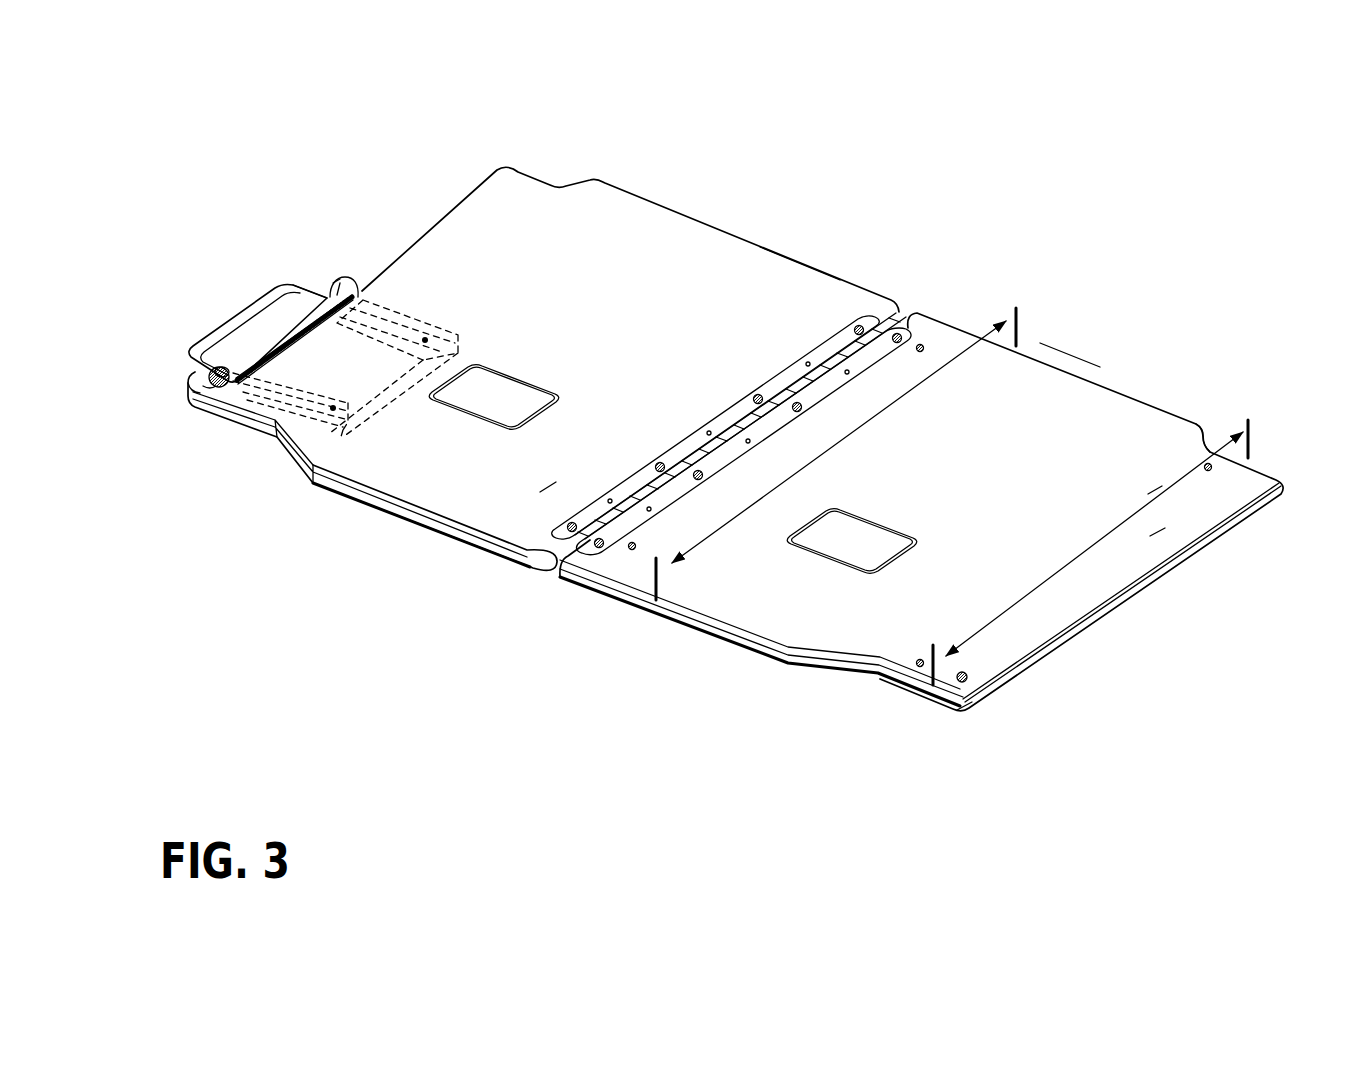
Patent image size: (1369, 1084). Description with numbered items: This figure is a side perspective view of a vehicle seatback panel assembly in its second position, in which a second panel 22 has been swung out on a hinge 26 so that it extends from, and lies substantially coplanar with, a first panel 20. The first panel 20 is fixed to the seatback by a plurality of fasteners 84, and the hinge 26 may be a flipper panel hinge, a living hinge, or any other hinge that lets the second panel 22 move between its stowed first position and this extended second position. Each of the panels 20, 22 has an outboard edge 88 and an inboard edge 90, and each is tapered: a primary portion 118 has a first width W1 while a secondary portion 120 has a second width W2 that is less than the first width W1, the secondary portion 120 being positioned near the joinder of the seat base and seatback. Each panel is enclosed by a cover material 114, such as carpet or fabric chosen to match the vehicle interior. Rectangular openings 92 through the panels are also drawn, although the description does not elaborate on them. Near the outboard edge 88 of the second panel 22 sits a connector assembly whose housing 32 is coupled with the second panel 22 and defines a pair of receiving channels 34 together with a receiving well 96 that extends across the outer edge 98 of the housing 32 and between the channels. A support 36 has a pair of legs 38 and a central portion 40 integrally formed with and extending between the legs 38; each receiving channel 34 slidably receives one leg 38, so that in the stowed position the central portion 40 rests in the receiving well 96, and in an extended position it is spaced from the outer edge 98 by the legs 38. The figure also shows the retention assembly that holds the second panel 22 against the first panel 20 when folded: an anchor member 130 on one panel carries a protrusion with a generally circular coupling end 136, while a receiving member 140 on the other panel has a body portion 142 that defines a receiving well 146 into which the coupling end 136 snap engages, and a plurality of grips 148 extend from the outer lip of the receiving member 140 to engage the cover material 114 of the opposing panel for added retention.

The first panel 20 is at (1103, 440).
The second panel 22 is at (628, 253).
The hinge 26 is at (888, 320).
The housing 32 is at (337, 287).
The receiving channels 34 is at (400, 312).
The support 36 is at (225, 326).
The legs 38 is at (413, 330).
The central portion 40 is at (231, 331).
The fasteners 84 is at (922, 346).
The outboard edge 88 is at (367, 500).
The inboard edge 90 is at (805, 270).
The opening 92 is at (490, 410).
The receiving well 96 is at (262, 295).
The outer edge 98 is at (317, 290).
The cover material 114 is at (547, 487).
The primary portion 118 is at (1158, 458).
The secondary portion 120 is at (1155, 532).
The anchor member 130 is at (968, 690).
The coupling end 136 is at (967, 697).
The receiving member 140 is at (187, 382).
The body portion 142 is at (208, 378).
The receiving well 146 is at (220, 368).
The grips 148 is at (207, 383).
The first width W1 is at (832, 450).
The second width W2 is at (1053, 567).